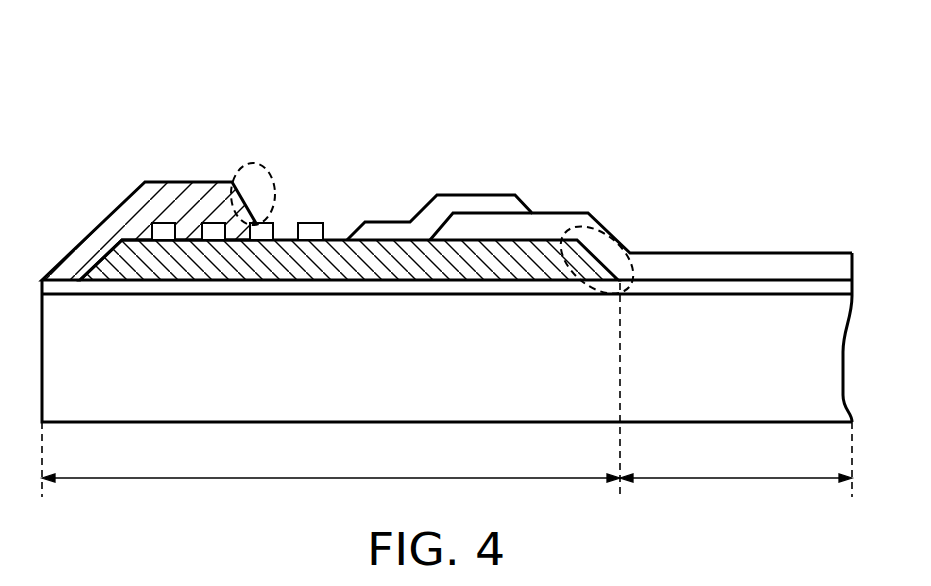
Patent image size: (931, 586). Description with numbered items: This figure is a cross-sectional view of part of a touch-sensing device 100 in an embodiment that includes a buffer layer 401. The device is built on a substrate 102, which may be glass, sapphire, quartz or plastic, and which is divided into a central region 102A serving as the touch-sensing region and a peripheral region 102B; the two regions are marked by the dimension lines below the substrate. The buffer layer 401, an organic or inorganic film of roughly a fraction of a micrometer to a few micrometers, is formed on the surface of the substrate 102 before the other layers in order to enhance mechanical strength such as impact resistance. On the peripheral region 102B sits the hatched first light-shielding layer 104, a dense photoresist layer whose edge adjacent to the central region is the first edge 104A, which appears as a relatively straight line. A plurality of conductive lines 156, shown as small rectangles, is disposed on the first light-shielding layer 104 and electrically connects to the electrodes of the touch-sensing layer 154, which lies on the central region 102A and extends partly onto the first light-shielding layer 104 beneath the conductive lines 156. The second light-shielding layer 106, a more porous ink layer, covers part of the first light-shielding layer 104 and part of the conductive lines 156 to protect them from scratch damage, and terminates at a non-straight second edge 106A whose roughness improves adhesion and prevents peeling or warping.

The touch-sensing device 100 is at (762, 86).
The substrate 102 is at (812, 315).
The central region 102A is at (736, 459).
The peripheral region 102B is at (331, 390).
The first light-shielding layer 104 is at (388, 250).
The first edge 104A is at (612, 245).
The second light-shielding layer 106 is at (173, 194).
The second edge 106A is at (253, 163).
The touch-sensing layer 154 is at (735, 265).
The conductive lines 156 is at (312, 230).
The buffer layer 401 is at (668, 287).